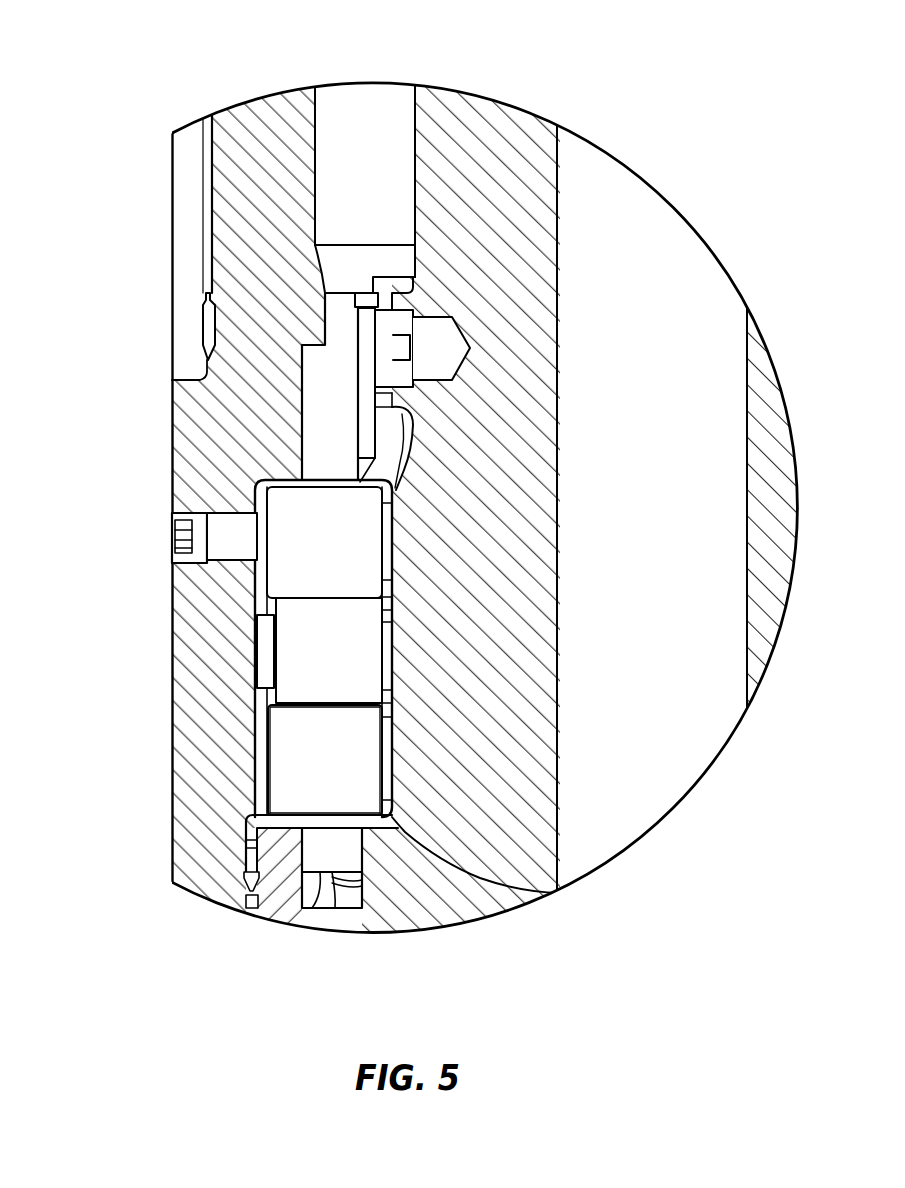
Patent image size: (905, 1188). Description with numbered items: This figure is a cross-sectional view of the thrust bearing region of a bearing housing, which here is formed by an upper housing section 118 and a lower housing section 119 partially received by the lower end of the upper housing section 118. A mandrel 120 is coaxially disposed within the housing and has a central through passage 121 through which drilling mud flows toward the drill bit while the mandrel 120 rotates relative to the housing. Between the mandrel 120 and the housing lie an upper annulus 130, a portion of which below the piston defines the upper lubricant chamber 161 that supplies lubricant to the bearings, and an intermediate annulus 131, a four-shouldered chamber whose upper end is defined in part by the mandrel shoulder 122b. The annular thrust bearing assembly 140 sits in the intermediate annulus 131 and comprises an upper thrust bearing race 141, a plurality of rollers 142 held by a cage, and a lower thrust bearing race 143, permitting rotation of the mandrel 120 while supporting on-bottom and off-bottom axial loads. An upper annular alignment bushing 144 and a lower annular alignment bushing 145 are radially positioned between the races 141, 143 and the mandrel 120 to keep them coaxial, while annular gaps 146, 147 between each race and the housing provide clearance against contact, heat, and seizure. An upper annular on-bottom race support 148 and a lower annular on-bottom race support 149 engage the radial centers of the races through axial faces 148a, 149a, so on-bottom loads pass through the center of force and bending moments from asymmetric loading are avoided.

The upper housing section 118 is at (218, 608).
The lower housing section 119 is at (283, 867).
The mandrel 120 is at (470, 800).
The central through passage 121 is at (682, 413).
The mandrel shoulder 122b is at (410, 487).
The upper annulus 130 is at (370, 148).
The intermediate annulus 131 is at (265, 694).
The thrust bearing assembly 140 is at (493, 562).
The upper thrust bearing race 141 is at (330, 553).
The rollers 142 is at (320, 662).
The lower thrust bearing race 143 is at (328, 768).
The upper annular alignment bushing 144 is at (387, 537).
The lower annular alignment bushing 145 is at (388, 775).
The annular gap 146 is at (262, 552).
The annular gap 147 is at (262, 797).
The upper annular on-bottom race support 148 is at (330, 423).
The axial face 148a is at (185, 383).
The lower annular on-bottom race support 149 is at (318, 888).
The axial face 149a is at (332, 822).
The upper lubricant chamber 161 is at (380, 116).